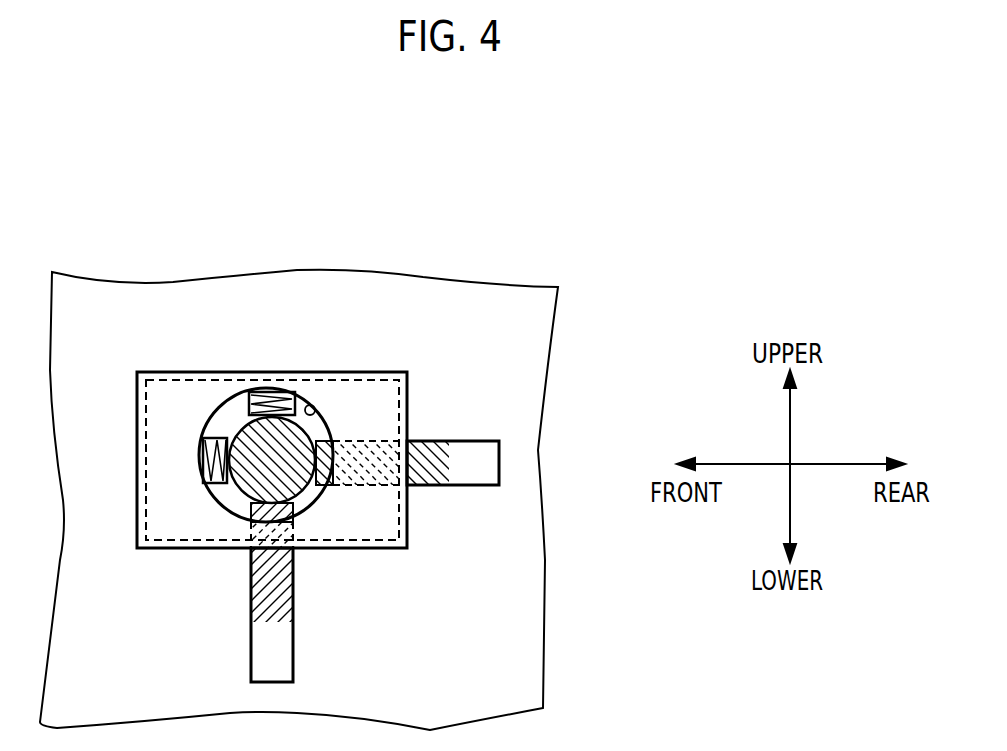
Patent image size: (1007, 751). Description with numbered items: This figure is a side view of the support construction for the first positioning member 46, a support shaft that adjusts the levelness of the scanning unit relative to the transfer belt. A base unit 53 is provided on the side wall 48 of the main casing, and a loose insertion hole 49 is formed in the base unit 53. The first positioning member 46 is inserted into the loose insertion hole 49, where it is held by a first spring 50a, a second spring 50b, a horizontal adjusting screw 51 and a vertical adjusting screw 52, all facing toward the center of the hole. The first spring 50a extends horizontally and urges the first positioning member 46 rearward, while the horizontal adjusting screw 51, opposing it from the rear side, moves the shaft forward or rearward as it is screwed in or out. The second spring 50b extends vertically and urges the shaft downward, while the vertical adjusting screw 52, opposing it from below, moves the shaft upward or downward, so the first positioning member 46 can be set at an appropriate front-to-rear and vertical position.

The first positioning member 46 is at (203, 433).
The side wall 48 is at (328, 286).
The loose insertion hole 49 is at (310, 405).
The first spring 50a is at (212, 487).
The second spring 50b is at (240, 400).
The horizontal adjusting screw 51 is at (463, 441).
The vertical adjusting screw 52 is at (295, 638).
The base unit 53 is at (160, 372).